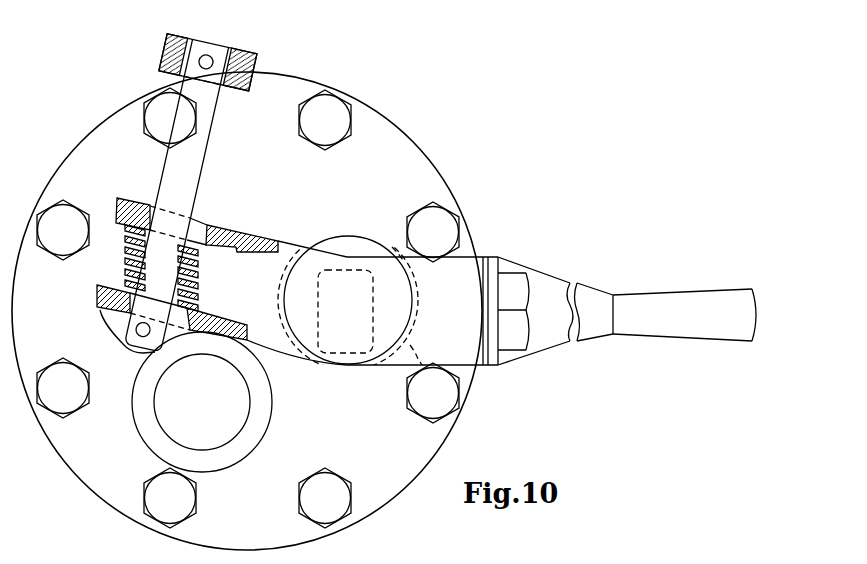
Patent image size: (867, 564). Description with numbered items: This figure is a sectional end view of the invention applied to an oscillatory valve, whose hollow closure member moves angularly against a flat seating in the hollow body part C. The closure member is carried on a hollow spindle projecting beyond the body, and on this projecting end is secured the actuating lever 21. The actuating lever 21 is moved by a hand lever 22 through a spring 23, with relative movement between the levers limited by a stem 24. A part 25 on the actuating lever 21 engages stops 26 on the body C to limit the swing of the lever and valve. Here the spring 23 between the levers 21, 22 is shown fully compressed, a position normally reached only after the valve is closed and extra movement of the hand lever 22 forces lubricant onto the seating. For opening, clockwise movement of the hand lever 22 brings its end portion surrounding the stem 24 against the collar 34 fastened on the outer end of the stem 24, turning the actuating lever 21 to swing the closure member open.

The hollow body part C is at (428, 166).
The actuating lever 21 is at (256, 334).
The hand lever 22 is at (256, 234).
The spring 23 is at (193, 273).
The stem 24 is at (193, 163).
The part on the lever 25 is at (403, 262).
The stops 26 is at (392, 247).
The collar 34 is at (178, 34).